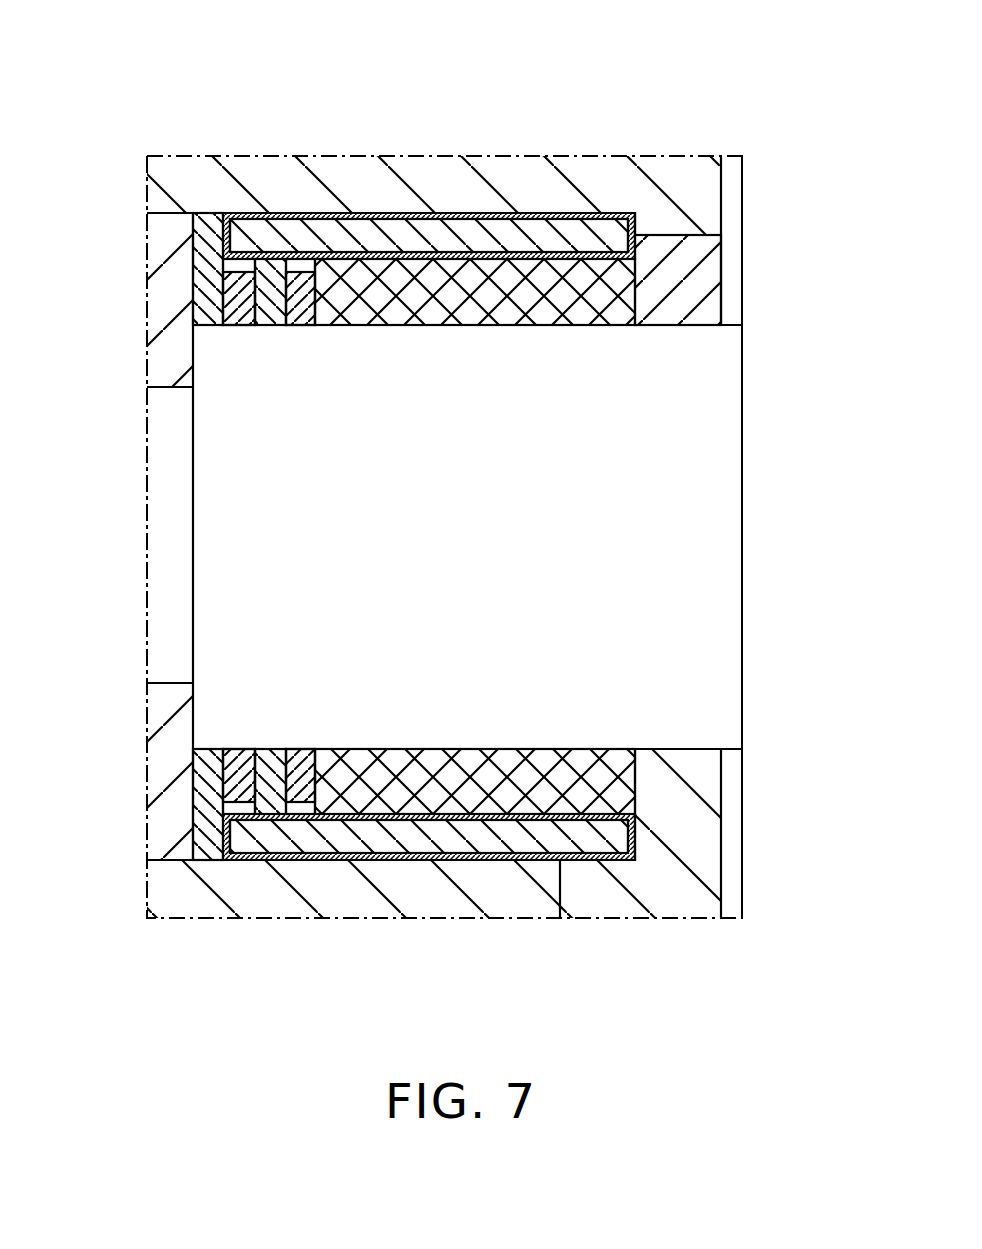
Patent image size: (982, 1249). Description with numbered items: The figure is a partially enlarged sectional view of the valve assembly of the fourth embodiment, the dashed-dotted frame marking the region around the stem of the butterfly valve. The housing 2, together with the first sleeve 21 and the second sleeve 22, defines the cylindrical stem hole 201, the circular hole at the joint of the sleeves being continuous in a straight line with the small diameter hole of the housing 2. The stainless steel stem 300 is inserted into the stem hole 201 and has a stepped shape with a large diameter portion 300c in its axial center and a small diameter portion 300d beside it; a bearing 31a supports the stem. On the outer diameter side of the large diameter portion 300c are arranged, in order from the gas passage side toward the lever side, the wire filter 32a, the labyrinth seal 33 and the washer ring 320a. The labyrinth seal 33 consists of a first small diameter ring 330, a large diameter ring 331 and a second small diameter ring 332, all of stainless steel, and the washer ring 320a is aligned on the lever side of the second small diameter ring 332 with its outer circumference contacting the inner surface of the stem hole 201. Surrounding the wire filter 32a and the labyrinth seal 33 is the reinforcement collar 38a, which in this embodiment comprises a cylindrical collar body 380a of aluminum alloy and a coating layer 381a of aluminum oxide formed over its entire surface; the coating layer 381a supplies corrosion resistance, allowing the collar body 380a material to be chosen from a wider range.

The housing 2 is at (332, 165).
The stem hole 201 is at (505, 219).
The first sleeve 21 is at (673, 897).
The second sleeve 22 is at (682, 268).
The stem 300 is at (752, 303).
The large diameter portion 300c is at (723, 439).
The small diameter portion 300d is at (162, 541).
The bearing 31a is at (165, 238).
The washer ring 320a is at (207, 295).
The wire filter 32a is at (520, 297).
The labyrinth seal 33 is at (350, 536).
The first small diameter ring 330 is at (238, 300).
The large diameter ring 331 is at (270, 308).
The second small diameter ring 332 is at (300, 310).
The reinforcement collar 38a is at (430, 431).
The collar body 380a is at (353, 237).
The coating layer 381a is at (427, 213).